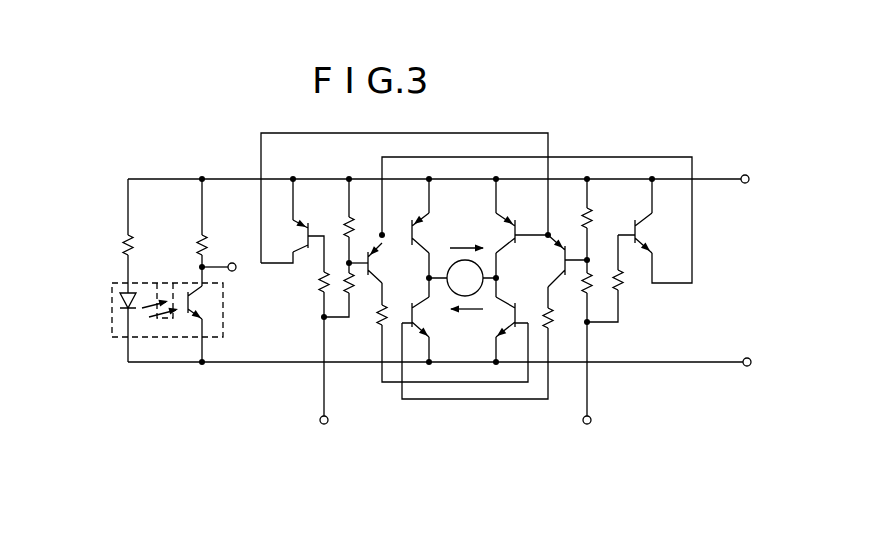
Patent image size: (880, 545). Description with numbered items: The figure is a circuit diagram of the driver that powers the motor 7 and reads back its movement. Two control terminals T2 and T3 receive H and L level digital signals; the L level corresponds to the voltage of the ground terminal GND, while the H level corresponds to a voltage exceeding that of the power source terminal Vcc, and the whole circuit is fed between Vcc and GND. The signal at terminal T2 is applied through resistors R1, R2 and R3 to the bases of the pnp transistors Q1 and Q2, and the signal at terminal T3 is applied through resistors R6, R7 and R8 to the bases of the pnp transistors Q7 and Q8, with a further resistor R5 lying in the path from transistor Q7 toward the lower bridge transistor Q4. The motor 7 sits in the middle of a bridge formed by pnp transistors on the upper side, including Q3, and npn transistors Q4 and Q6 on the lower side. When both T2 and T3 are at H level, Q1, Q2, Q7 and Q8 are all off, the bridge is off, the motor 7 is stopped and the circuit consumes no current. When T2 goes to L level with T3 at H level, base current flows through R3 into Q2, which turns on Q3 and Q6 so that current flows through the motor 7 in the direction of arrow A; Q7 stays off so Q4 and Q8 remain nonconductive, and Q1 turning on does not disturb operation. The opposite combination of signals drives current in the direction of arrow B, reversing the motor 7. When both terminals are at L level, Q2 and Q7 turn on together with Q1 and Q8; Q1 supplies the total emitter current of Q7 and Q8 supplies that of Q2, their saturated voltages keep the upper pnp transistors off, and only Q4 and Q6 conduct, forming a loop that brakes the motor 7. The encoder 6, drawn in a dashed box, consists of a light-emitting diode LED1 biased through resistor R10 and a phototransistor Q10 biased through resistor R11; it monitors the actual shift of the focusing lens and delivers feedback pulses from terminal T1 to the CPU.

The encoder 6 is at (117, 342).
The motor 7 is at (482, 268).
The light-emitting diode LED1 is at (119, 300).
The phototransistor Q10 is at (196, 306).
The resistor R10 is at (124, 240).
The resistor R11 is at (199, 240).
The terminal T1 is at (229, 268).
The control terminal T2 is at (322, 434).
The control terminal T3 is at (585, 434).
The pnp transistor Q1 is at (306, 236).
The pnp transistor Q2 is at (388, 263).
The pnp transistor Q3 is at (412, 222).
The npn transistor Q4 is at (408, 313).
The npn transistor Q6 is at (518, 313).
The pnp transistor Q7 is at (565, 245).
The pnp transistor Q8 is at (640, 237).
The resistor R1 is at (320, 286).
The resistor R2 is at (345, 222).
The resistor R3 is at (353, 292).
The resistor R5 is at (553, 318).
The resistor R6 is at (591, 218).
The resistor R7 is at (592, 290).
The resistor R8 is at (623, 282).
The arrow A is at (467, 241).
The arrow B is at (466, 322).
The power source terminal Vcc is at (761, 180).
The ground terminal GND is at (767, 363).